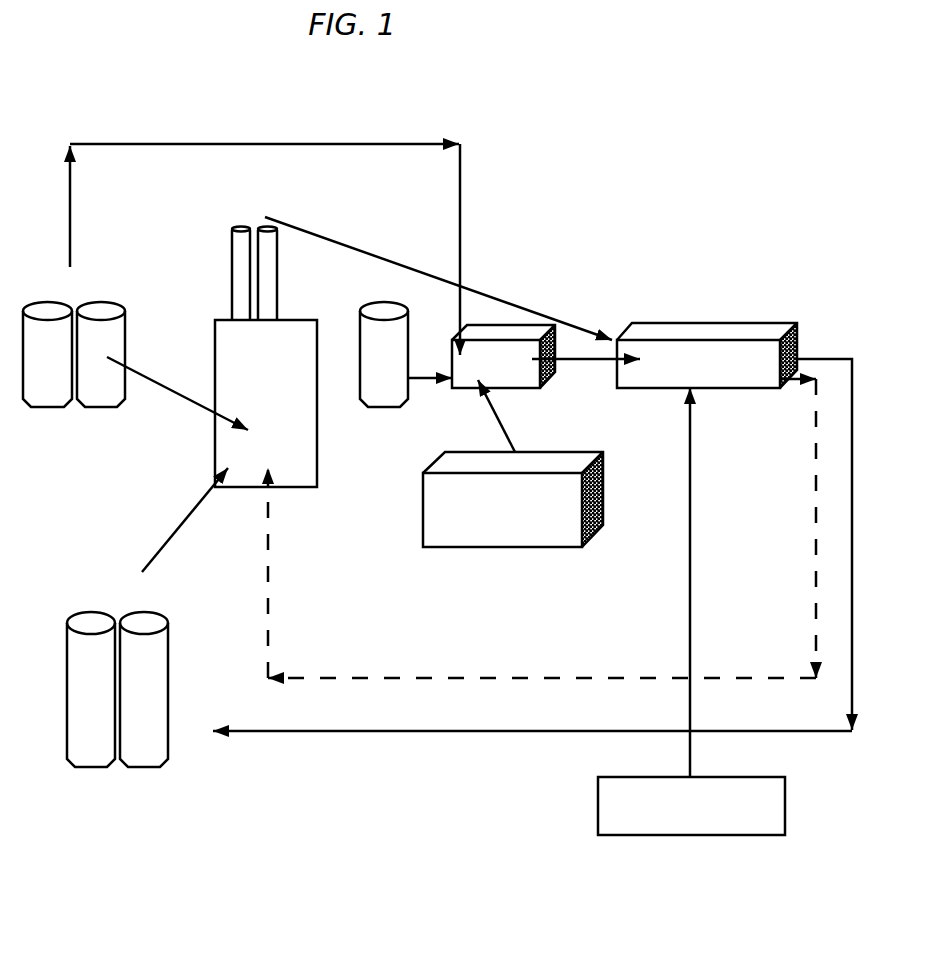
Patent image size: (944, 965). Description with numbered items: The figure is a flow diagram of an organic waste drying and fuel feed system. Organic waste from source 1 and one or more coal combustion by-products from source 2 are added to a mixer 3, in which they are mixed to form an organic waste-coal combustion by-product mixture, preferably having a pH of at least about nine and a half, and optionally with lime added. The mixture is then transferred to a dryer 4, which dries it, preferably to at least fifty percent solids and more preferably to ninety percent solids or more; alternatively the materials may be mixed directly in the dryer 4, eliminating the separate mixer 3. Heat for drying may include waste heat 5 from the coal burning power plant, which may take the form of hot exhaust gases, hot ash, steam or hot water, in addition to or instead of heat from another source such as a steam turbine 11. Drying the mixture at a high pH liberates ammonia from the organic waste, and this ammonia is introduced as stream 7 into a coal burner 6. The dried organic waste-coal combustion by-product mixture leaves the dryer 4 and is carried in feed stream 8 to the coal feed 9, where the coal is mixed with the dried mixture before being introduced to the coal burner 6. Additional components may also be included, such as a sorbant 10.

The organic waste source 1 is at (513, 463).
The coal combustion by-product source 2 is at (406, 354).
The mixer 3 is at (546, 356).
The dryer 4 is at (734, 526).
The waste heat 5 is at (422, 268).
The coal burner 6 is at (266, 403).
The stream 7 is at (542, 528).
The feed stream 8 is at (532, 750).
The coal feed 9 is at (147, 617).
The sorbant 10 is at (241, 287).
The steam turbine 11 is at (691, 611).